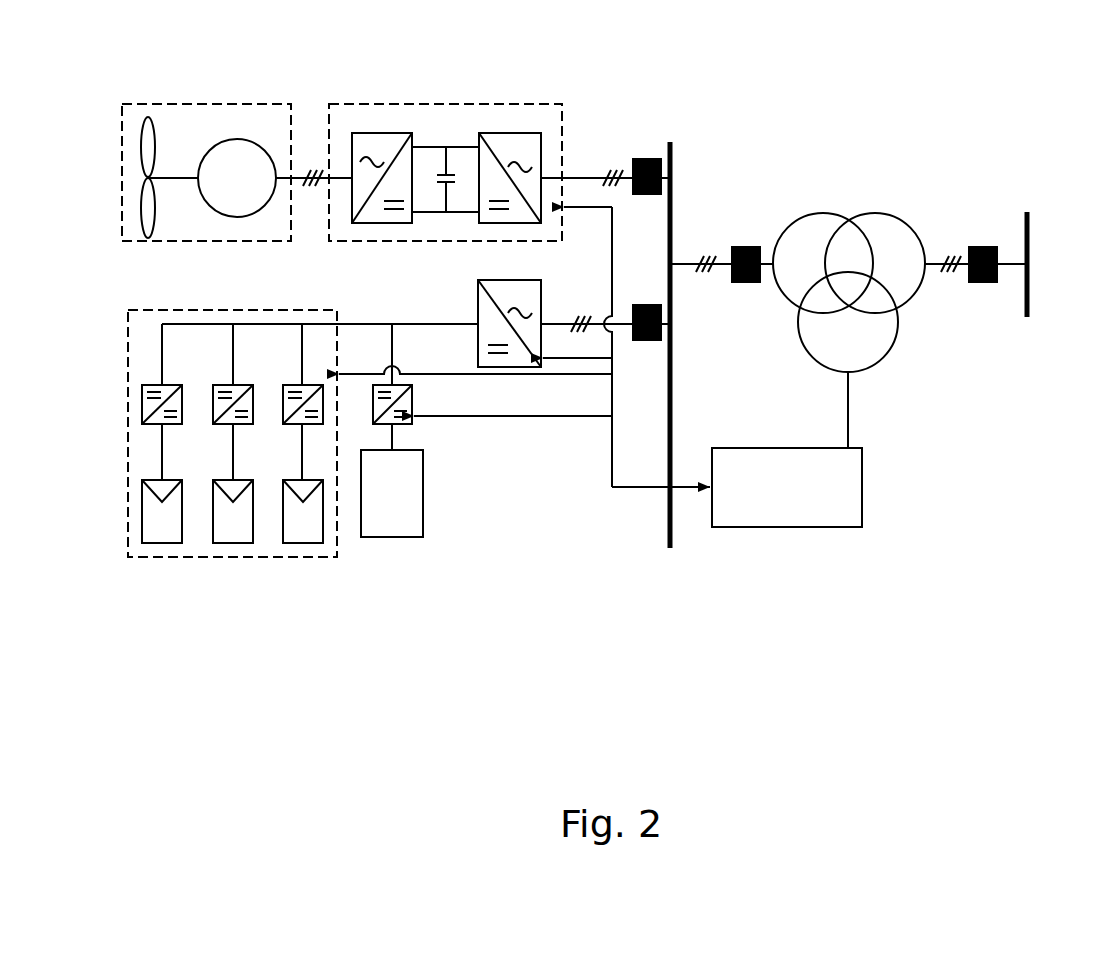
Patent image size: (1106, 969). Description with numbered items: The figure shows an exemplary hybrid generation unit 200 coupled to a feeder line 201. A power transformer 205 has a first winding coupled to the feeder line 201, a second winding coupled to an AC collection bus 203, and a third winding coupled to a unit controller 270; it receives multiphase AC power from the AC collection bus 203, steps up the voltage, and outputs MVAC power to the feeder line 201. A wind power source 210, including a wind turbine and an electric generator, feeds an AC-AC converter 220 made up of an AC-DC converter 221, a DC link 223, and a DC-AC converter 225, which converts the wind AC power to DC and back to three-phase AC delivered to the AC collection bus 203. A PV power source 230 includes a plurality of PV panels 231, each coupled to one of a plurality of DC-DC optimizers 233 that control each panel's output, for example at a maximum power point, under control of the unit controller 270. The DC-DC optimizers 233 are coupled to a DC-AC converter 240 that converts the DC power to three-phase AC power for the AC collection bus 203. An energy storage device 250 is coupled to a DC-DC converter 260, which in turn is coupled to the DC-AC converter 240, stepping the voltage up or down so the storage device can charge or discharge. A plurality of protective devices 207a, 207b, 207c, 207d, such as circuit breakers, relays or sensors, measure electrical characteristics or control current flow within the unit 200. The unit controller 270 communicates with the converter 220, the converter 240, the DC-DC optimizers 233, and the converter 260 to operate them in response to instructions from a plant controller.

The hybrid generation unit 200 is at (522, 552).
The feeder line 201 is at (1030, 232).
The AC collection bus 203 is at (673, 152).
The power transformer 205 is at (848, 220).
The protective device 207a is at (983, 247).
The protective device 207b is at (746, 247).
The protective device 207c is at (647, 159).
The protective device 207d is at (647, 305).
The wind power source 210 is at (162, 104).
The AC-AC converter 220 is at (445, 161).
The AC-DC converter 221 is at (372, 133).
The DC link 223 is at (446, 212).
The DC-AC converter 225 is at (523, 133).
The PV power source 230 is at (279, 409).
The PV panels 231 is at (140, 510).
The DC-DC optimizers 233 is at (140, 414).
The DC-AC converter 240 is at (541, 286).
The energy storage device 250 is at (423, 462).
The DC-DC converter 260 is at (412, 398).
The unit controller 270 is at (747, 448).